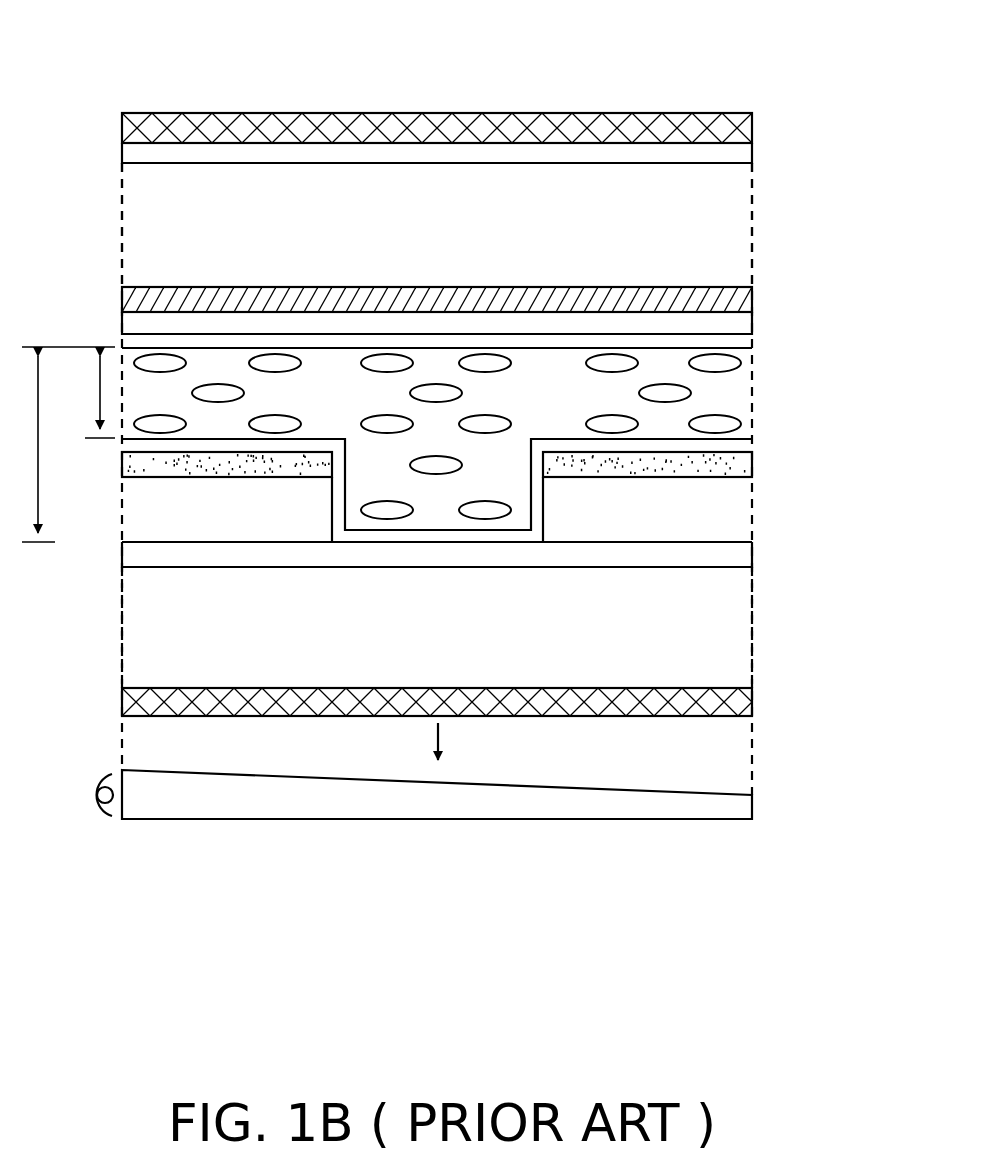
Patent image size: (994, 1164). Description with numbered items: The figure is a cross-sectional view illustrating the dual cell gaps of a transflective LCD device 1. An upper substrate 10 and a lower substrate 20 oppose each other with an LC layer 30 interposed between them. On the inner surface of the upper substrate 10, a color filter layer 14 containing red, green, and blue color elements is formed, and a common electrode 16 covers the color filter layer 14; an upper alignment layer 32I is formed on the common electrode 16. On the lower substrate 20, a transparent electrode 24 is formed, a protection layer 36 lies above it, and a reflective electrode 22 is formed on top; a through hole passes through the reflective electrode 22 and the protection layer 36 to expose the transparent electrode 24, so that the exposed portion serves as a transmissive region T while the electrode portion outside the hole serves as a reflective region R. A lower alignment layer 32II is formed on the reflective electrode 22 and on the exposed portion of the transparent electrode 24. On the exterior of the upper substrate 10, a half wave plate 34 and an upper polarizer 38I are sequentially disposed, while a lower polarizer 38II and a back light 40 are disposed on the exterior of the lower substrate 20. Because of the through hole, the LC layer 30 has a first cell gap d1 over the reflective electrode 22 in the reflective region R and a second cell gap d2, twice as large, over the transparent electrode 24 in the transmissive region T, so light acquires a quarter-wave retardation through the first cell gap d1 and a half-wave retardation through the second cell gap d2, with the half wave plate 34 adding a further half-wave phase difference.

The transflective LCD device 1 is at (150, 48).
The upper substrate 10 is at (735, 235).
The color filter layer 14 is at (737, 298).
The common electrode 16 is at (735, 322).
The lower substrate 20 is at (735, 640).
The reflective electrode 22 is at (735, 470).
The transparent electrode 24 is at (735, 562).
The LC layer 30 is at (735, 397).
The upper alignment layer 32I is at (735, 345).
The lower alignment layer 32II is at (735, 443).
The half wave plate 34 is at (735, 155).
The protection layer 36 is at (735, 508).
The upper polarizer 38I is at (737, 128).
The lower polarizer 38II is at (737, 702).
The back light 40 is at (735, 812).
The reflective region R is at (219, 428).
The transmissive region T is at (371, 455).
The first cell gap d1 is at (68, 392).
The second cell gap d2 is at (29, 449).